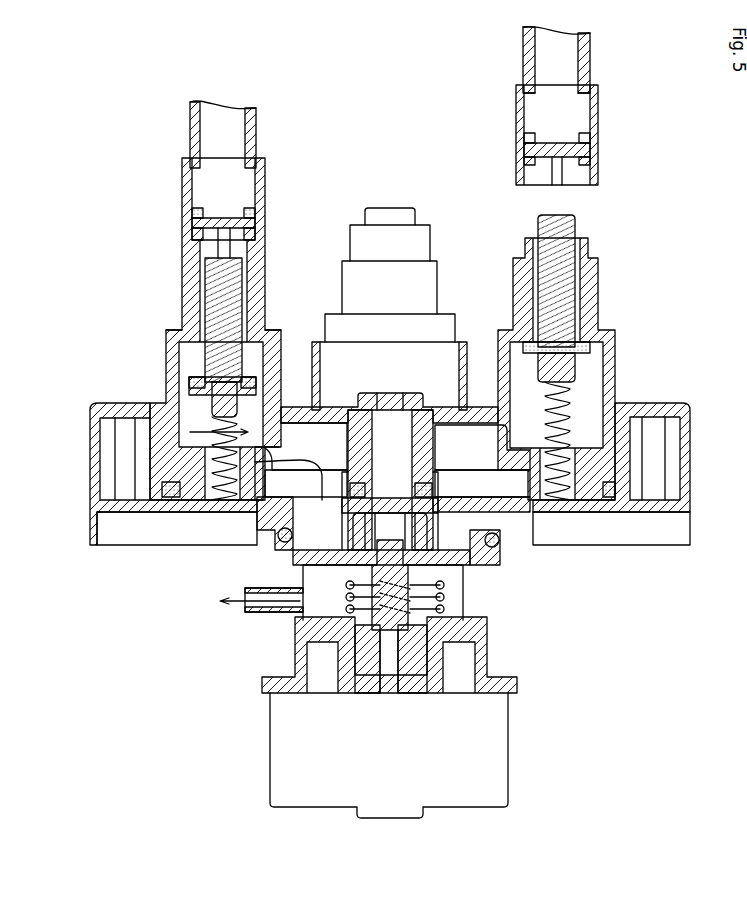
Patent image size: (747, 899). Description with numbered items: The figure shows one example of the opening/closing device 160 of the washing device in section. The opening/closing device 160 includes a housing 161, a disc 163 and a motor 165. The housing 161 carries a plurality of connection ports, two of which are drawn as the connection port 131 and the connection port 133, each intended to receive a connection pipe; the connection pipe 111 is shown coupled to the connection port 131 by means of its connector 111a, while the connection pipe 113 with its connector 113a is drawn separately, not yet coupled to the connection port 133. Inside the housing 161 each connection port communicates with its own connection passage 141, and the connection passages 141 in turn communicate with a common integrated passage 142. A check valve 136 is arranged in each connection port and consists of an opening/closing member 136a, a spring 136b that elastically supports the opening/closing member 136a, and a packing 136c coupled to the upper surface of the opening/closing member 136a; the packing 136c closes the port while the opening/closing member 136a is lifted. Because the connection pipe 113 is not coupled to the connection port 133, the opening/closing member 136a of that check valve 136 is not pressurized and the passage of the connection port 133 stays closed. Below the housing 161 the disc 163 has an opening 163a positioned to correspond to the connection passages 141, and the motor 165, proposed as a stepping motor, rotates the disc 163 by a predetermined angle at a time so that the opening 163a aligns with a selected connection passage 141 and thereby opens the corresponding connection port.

The connection pipe 111 is at (197, 128).
The connector 111a is at (190, 213).
The connection pipe 113 is at (590, 58).
The connector 113a is at (595, 130).
The connection port 131 is at (190, 282).
The connection port 133 is at (598, 280).
The check valve 136 is at (134, 379).
The opening/closing member 136a is at (213, 306).
The spring 136b is at (207, 425).
The packing 136c is at (190, 384).
The connection passage 141 is at (266, 466).
The integrated passage 142 is at (258, 612).
The opening/closing device 160 is at (407, 143).
The housing 161 is at (614, 548).
The disc 163 is at (503, 565).
The opening 163a is at (283, 565).
The motor 165 is at (283, 749).